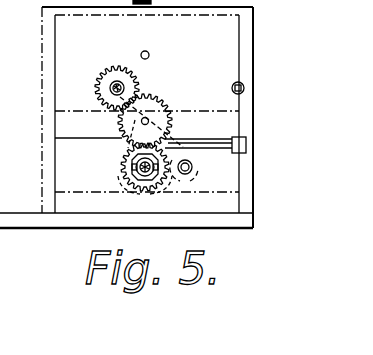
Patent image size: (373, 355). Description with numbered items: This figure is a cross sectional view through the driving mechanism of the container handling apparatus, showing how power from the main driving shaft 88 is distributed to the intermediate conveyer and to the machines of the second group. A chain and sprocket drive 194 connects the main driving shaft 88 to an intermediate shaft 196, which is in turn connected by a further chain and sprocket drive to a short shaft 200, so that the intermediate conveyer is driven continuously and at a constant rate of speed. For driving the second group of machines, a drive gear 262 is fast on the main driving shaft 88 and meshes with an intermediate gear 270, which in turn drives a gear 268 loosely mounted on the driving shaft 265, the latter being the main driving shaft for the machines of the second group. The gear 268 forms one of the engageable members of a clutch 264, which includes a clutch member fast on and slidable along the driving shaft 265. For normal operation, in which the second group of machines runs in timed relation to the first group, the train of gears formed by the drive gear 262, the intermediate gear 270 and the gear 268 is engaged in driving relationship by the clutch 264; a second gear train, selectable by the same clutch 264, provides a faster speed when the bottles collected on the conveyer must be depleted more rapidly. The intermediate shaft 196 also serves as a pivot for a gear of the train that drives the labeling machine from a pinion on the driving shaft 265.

The drive gear 262 is at (118, 66).
The main driving shaft 88 is at (117, 88).
The short shaft 200 is at (149, 52).
The intermediate gear 270 is at (160, 100).
The chain and sprocket drive 194 is at (122, 130).
The gear 268 is at (127, 165).
The clutch 264 is at (136, 186).
The driving shaft 265 is at (156, 186).
The intermediate shaft 196 is at (192, 169).